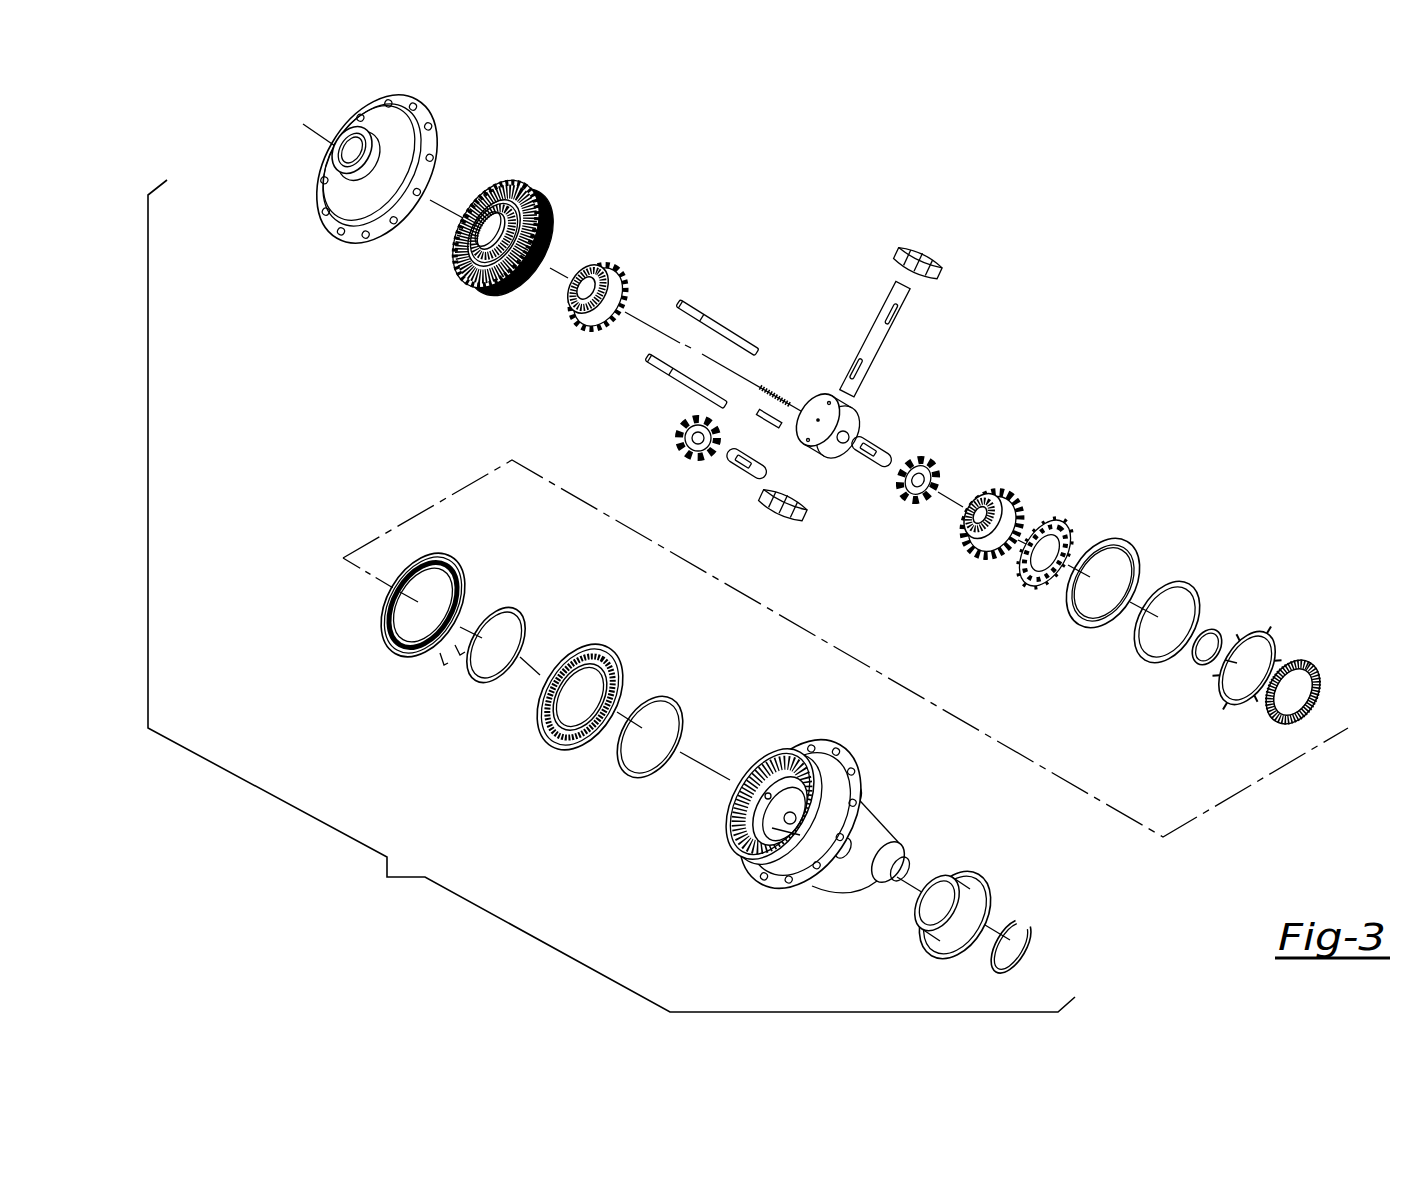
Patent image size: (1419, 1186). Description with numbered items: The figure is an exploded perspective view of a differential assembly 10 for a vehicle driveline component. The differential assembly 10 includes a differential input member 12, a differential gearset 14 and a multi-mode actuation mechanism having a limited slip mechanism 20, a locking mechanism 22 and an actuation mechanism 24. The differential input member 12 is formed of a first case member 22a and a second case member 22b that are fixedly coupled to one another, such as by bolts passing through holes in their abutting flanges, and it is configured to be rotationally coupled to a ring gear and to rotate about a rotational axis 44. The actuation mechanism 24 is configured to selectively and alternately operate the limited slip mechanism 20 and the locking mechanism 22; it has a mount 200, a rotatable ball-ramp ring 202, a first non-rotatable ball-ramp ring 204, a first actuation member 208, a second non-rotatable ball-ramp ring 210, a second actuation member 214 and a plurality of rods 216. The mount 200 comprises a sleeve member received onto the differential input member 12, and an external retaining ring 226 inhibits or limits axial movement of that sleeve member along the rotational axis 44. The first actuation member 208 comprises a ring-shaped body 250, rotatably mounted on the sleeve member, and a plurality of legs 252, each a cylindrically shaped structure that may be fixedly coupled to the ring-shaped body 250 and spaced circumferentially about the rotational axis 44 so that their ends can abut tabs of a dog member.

The differential assembly 10 is at (611, 596).
The differential input member 12 is at (930, 854).
The differential gearset 14 is at (911, 549).
The limited slip mechanism 20 is at (619, 213).
The locking mechanism 22 is at (1040, 498).
The first case member 22a is at (861, 836).
The second case member 22b is at (333, 188).
The actuation mechanism 24 is at (491, 675).
The rotational axis 44 is at (1200, 842).
The mount 200 is at (1000, 885).
The rotatable ball-ramp ring 202 is at (617, 668).
The first non-rotatable ball-ramp ring 204 is at (515, 612).
The first actuation member 208 is at (1237, 646).
The second non-rotatable ball-ramp ring 210 is at (385, 654).
The second actuation member 214 is at (1123, 548).
The rods 216 is at (700, 312).
The external retaining ring 226 is at (1030, 956).
The ring-shaped body 250 is at (1275, 653).
The legs 252 is at (1218, 672).